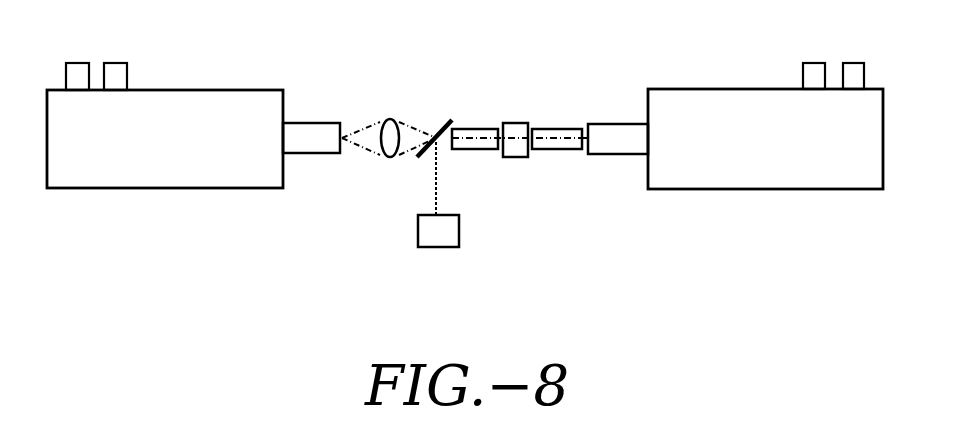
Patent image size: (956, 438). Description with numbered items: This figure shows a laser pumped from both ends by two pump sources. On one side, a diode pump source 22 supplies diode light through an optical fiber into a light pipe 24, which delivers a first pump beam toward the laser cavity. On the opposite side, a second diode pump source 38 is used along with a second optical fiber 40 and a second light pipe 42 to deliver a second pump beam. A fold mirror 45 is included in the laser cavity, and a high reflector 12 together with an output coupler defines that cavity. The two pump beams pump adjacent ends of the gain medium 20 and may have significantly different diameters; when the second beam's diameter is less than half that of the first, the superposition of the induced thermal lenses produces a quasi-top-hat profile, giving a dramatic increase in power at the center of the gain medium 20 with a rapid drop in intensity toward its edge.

The diode pump source 22 is at (189, 100).
The light pipe 24 is at (305, 137).
The fold mirror 45 is at (442, 128).
The second light pipe 42 is at (470, 150).
The gain medium 20 is at (504, 123).
The high reflector 12 is at (530, 130).
The second optical fiber 40 is at (602, 132).
The second diode pump source 38 is at (708, 98).